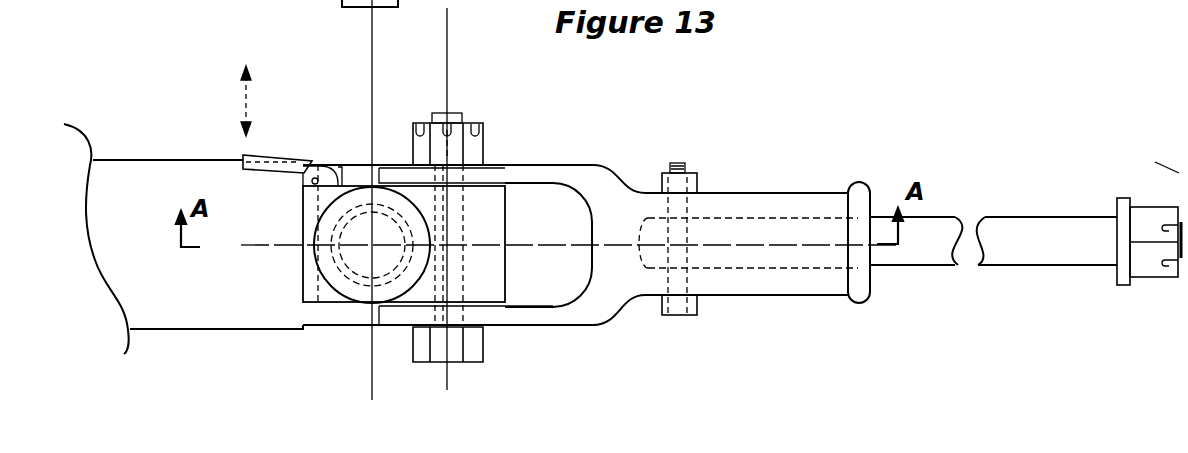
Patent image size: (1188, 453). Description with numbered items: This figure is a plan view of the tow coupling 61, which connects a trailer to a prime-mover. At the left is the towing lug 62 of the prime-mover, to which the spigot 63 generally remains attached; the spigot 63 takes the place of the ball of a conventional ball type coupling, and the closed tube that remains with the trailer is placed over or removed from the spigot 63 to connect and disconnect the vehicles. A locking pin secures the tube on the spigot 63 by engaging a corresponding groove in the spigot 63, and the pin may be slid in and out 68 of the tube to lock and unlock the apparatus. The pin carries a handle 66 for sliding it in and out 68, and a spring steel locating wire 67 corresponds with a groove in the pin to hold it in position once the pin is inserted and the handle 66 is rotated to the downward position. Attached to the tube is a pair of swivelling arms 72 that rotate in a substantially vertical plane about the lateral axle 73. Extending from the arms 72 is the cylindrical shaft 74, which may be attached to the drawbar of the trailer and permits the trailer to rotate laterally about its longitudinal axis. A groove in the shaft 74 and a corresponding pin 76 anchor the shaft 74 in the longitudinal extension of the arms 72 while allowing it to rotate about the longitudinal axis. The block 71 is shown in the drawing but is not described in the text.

The tow coupling 61 is at (835, 172).
The towing lug 62 is at (148, 180).
The spigot 63 is at (320, 303).
The handle 66 is at (278, 165).
The spring steel locating wire 67 is at (316, 165).
The sliding in and out direction of pin 68 is at (227, 101).
The block 71 is at (491, 197).
The swivelling arms 72 is at (598, 175).
The lateral axle 73 is at (465, 110).
The cylindrical shaft 74 is at (775, 227).
The pin 76 is at (683, 162).